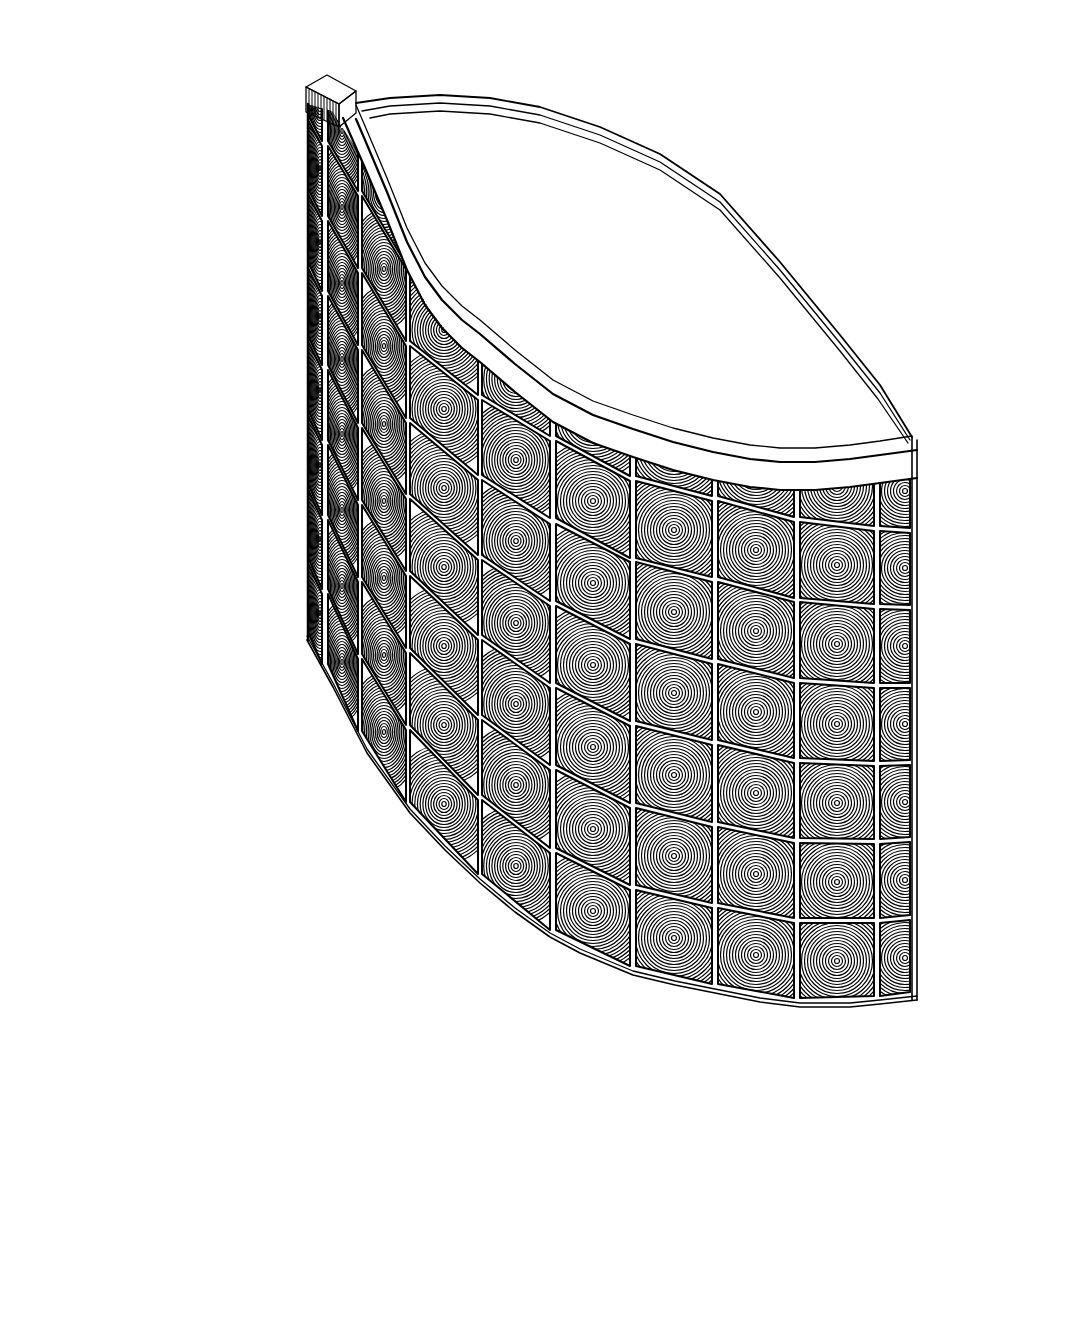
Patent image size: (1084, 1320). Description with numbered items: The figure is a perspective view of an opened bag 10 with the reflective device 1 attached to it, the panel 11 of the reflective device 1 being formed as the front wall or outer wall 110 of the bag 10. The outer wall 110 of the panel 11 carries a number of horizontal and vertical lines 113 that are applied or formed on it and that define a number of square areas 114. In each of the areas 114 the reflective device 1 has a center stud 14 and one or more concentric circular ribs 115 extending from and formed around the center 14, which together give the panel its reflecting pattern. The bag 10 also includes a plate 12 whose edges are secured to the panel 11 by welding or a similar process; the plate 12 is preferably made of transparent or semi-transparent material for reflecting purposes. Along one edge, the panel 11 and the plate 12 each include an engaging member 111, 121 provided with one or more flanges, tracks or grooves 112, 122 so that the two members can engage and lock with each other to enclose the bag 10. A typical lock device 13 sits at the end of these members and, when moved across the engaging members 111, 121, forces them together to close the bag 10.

The reflective device 1 is at (227, 439).
The bag 10 is at (736, 177).
The panel 11 is at (308, 262).
The plate 12 is at (716, 295).
The lock device 13 is at (341, 90).
The center stud 14 is at (672, 948).
The outer wall 110 is at (305, 606).
The engaging member 111 is at (322, 145).
The groove 112 is at (388, 230).
The horizontal and vertical lines 113 is at (403, 707).
The square area 114 is at (455, 782).
The concentric rib 115 is at (407, 733).
The engaging member 121 is at (588, 124).
The groove 122 is at (532, 104).